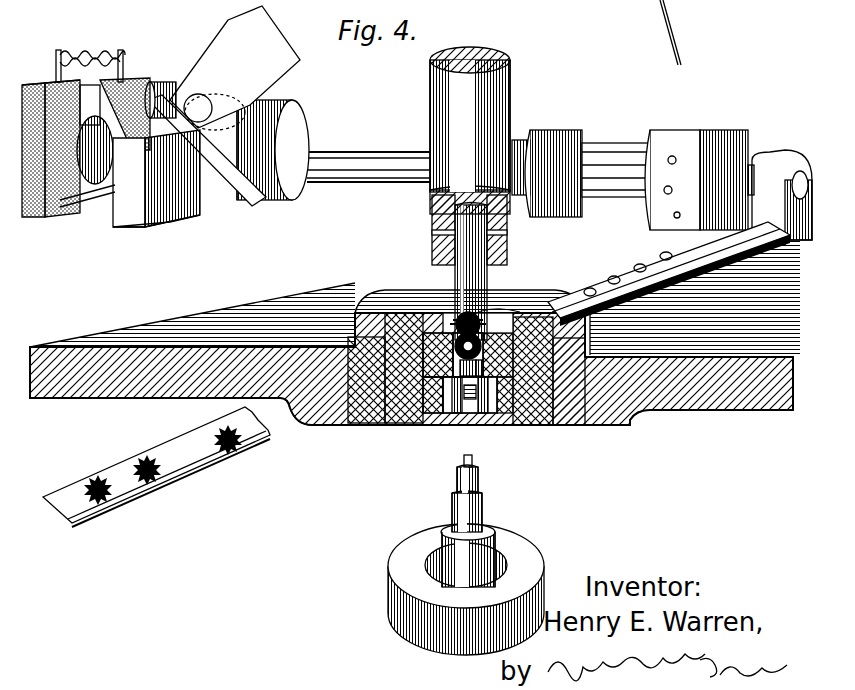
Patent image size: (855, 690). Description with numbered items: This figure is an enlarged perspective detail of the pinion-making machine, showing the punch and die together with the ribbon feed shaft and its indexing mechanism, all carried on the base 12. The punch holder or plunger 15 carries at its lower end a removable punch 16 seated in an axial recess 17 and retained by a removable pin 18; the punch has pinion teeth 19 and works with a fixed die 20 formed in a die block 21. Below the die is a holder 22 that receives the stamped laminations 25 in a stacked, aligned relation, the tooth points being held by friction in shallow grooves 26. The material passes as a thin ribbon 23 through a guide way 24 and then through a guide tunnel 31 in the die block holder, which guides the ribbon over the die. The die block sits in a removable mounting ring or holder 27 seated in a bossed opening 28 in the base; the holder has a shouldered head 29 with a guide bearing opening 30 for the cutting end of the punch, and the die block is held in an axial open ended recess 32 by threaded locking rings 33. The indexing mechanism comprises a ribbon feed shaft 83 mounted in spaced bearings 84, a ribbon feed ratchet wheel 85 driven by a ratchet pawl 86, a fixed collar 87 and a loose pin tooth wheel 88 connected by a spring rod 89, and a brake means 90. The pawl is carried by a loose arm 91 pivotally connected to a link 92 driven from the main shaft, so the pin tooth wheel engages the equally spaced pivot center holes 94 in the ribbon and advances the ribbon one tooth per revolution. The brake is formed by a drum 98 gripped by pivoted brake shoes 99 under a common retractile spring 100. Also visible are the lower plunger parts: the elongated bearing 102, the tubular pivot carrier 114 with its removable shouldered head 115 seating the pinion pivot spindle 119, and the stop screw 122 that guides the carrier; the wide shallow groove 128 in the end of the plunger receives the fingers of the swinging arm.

The base 12 is at (677, 410).
The punch holder or plunger 15 is at (440, 115).
The punch 16 is at (455, 252).
The axial recess 17 is at (432, 222).
The pin 18 is at (455, 236).
The pinion teeth 19 is at (462, 318).
The die 20 is at (452, 332).
The die block 21 is at (520, 320).
The holder 22 is at (470, 406).
The ribbon 23 is at (660, 250).
The guide way 24 is at (595, 265).
The laminations 25 is at (440, 323).
The grooves 26 is at (478, 392).
The mounting ring or holder 27 is at (540, 426).
The bossed opening 28 is at (572, 428).
The shouldered head 29 is at (420, 335).
The guide bearing opening 30 is at (482, 365).
The guide tunnel 31 is at (490, 352).
The axial open ended recess 32 is at (452, 396).
The threaded locking rings 33 is at (435, 385).
The ribbon feed shaft 83 is at (352, 150).
The bearings 84 is at (128, 225).
The ribbon feed ratchet wheel 85 is at (285, 118).
The ratchet pawl 86 is at (250, 95).
The fixed collar 87 is at (545, 140).
The pin tooth wheel 88 is at (690, 135).
The spring rod 89 is at (610, 142).
The brake means 90 is at (90, 95).
The loose arm 91 is at (163, 85).
The link 92 is at (250, 64).
The pivot center holes 94 is at (589, 288).
The drum 98 is at (58, 210).
The brake shoes 99 is at (33, 85).
The retractile spring 100 is at (70, 52).
The bearing 102 is at (400, 570).
The pivot or spindle carrier 114 is at (448, 550).
The shouldered head 115 is at (460, 508).
The pinion pivot shaft or spindle 119 is at (460, 471).
The stop screw 122 is at (445, 585).
The groove 128 is at (430, 218).